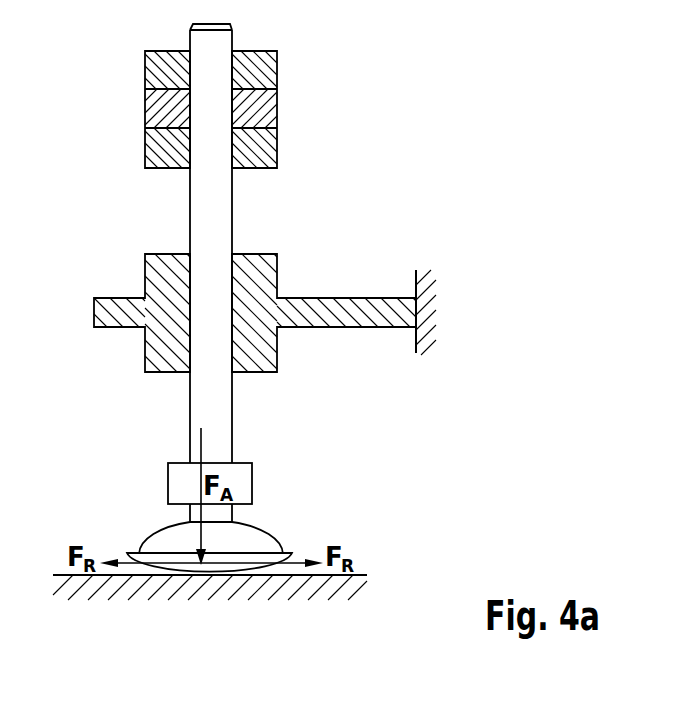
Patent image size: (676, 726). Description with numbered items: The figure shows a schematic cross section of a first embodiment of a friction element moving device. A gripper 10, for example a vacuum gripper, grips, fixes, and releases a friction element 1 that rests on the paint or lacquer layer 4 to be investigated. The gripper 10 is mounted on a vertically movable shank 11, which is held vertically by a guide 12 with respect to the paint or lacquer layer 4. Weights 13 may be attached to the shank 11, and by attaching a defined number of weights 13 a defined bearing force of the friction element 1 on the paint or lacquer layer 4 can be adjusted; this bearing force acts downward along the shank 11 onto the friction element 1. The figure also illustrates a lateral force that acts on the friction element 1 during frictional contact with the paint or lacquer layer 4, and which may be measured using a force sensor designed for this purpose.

The friction element 1 is at (215, 568).
The paint or lacquer layer 4 is at (277, 588).
The gripper 10 is at (250, 538).
The shank 11 is at (222, 209).
The guide 12 is at (268, 272).
The weights 13 is at (273, 105).